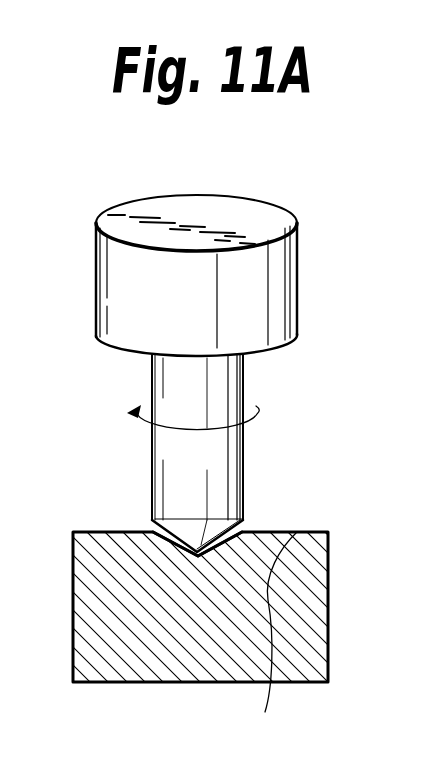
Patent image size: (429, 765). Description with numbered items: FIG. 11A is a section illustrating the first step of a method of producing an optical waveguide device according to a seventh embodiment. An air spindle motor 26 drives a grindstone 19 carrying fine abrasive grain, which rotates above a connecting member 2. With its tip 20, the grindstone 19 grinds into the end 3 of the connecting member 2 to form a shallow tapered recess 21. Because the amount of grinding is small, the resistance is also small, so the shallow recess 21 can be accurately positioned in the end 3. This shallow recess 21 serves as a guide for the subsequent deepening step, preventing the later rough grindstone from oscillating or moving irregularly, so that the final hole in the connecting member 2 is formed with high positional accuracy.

The air spindle motor 26 is at (278, 283).
The grindstone 19 is at (218, 393).
The shallow tapered recess 21 is at (243, 521).
The tip 20 is at (198, 556).
The connecting member 2 is at (147, 657).
The end 3 is at (297, 532).